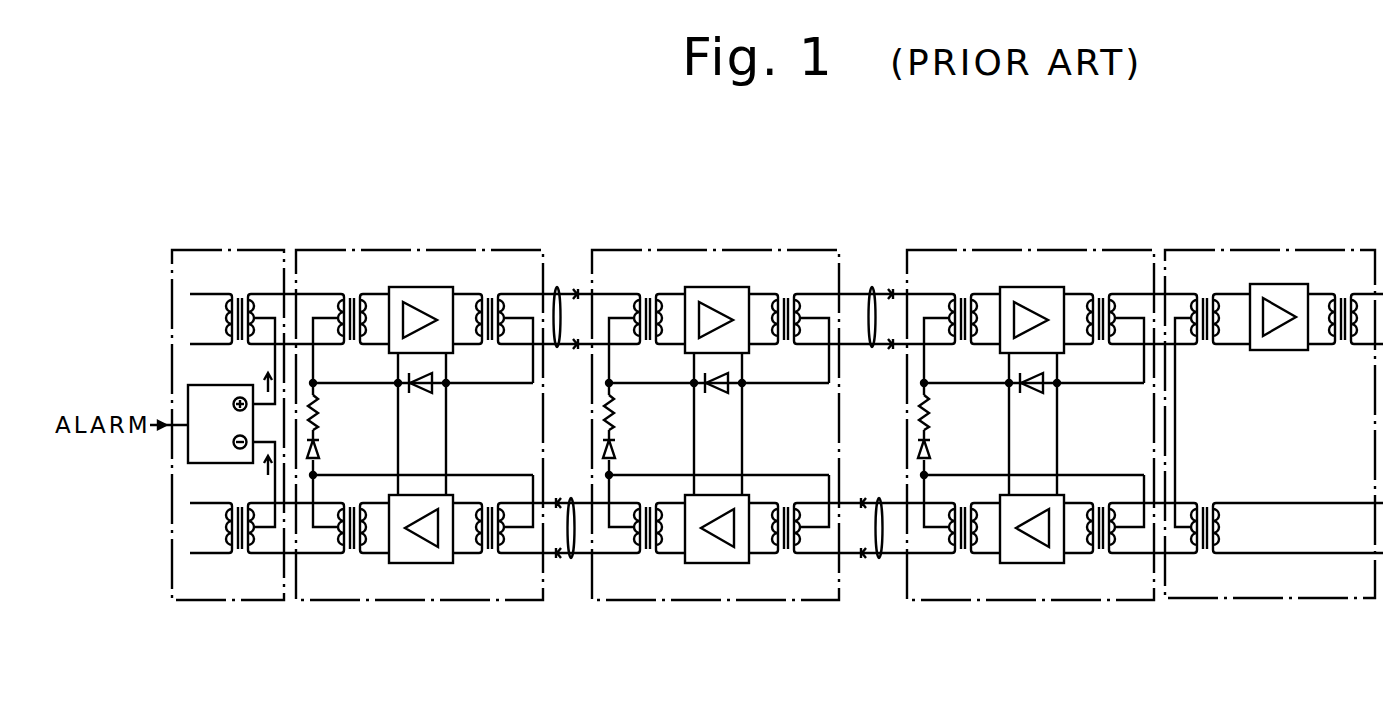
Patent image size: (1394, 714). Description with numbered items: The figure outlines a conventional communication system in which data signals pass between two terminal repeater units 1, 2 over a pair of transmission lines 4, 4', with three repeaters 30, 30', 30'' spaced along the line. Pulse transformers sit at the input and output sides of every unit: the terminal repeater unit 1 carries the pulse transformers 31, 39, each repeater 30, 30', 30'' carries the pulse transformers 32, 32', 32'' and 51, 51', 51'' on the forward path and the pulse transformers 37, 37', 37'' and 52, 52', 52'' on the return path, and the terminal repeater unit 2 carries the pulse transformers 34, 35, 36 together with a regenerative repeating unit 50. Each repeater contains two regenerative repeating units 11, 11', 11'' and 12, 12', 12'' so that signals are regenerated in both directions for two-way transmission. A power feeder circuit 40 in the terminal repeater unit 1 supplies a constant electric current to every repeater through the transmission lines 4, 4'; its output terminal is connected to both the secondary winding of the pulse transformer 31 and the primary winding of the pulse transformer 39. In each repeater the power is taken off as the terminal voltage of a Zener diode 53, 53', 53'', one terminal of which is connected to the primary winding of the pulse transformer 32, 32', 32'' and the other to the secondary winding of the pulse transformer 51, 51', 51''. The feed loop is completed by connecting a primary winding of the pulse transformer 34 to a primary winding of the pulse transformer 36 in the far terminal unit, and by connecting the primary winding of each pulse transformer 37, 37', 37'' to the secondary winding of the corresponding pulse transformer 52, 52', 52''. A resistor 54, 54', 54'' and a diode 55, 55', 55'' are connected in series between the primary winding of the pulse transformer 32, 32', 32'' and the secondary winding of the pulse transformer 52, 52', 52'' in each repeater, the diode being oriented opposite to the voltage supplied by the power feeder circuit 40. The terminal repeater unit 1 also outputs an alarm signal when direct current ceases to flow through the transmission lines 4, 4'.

The terminal repeater unit 1 is at (172, 567).
The terminal repeater unit 2 is at (1231, 250).
The transmission line 4 is at (722, 291).
The transmission line 4' is at (723, 558).
The regenerative repeating unit 11 is at (421, 285).
The regenerative repeating unit 11' is at (717, 285).
The regenerative repeating unit 11'' is at (1032, 285).
The regenerative repeating unit 12 is at (421, 567).
The regenerative repeating unit 12' is at (717, 567).
The regenerative repeating unit 12'' is at (1032, 567).
The repeater 30 is at (422, 395).
The repeater 30' is at (720, 395).
The repeater 30'' is at (1037, 395).
The pulse transformer 31 is at (239, 290).
The pulse transformer 32 is at (351, 281).
The pulse transformer 32' is at (647, 281).
The pulse transformer 32'' is at (962, 281).
The pulse transformer 34 is at (1207, 345).
The pulse transformer 35 is at (1345, 289).
The pulse transformer 36 is at (1207, 501).
The pulse transformer 37 is at (490, 571).
The pulse transformer 37' is at (787, 571).
The pulse transformer 37'' is at (1104, 571).
The pulse transformer 39 is at (238, 558).
The power feeder circuit 40 is at (210, 385).
The regenerative repeating unit 50 is at (1278, 350).
The pulse transformer 51 is at (490, 281).
The pulse transformer 51' is at (786, 281).
The pulse transformer 51'' is at (1102, 281).
The pulse transformer 52 is at (352, 571).
The pulse transformer 52' is at (649, 571).
The pulse transformer 52'' is at (966, 571).
The Zener diode 53 is at (421, 411).
The Zener diode 53' is at (720, 411).
The Zener diode 53'' is at (1037, 411).
The resistor 54 is at (342, 412).
The resistor 54' is at (640, 412).
The resistor 54'' is at (957, 412).
The diode 55 is at (341, 448).
The diode 55' is at (640, 448).
The diode 55'' is at (957, 448).